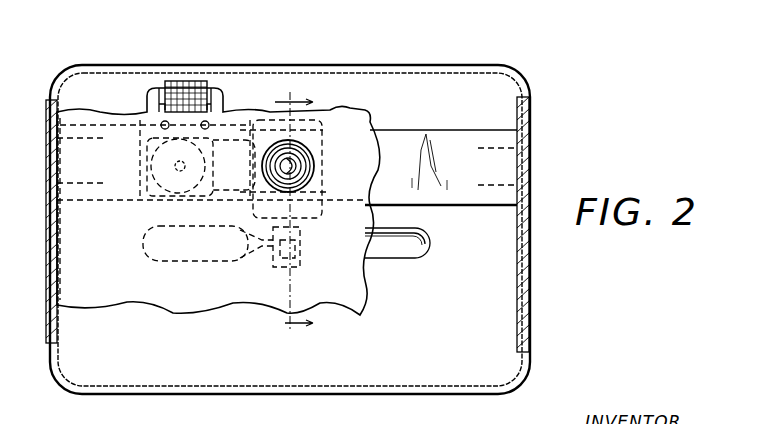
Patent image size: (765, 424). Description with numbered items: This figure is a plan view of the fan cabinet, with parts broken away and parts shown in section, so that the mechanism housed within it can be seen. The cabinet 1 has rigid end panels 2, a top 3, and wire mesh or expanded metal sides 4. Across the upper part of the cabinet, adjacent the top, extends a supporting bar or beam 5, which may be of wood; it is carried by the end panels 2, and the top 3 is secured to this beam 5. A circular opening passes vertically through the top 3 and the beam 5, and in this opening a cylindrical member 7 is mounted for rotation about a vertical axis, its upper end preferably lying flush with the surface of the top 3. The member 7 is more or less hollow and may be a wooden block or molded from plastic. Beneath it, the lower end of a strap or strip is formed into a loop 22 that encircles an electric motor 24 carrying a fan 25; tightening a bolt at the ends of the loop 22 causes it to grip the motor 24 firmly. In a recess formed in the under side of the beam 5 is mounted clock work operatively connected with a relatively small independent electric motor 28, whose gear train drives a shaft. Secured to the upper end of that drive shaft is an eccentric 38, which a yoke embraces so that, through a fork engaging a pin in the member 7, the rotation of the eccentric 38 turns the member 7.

The cabinet 1 is at (504, 108).
The end panels 2 is at (47, 323).
The top 3 is at (198, 298).
The sides 4 is at (370, 72).
The supporting bar or beam 5 is at (441, 148).
The cylindrical member 7 is at (305, 163).
The loop 22 is at (325, 166).
The electric motor 24 is at (441, 167).
The fan 25 is at (411, 251).
The independent electric motor 28 is at (147, 102).
The eccentric 38 is at (168, 167).